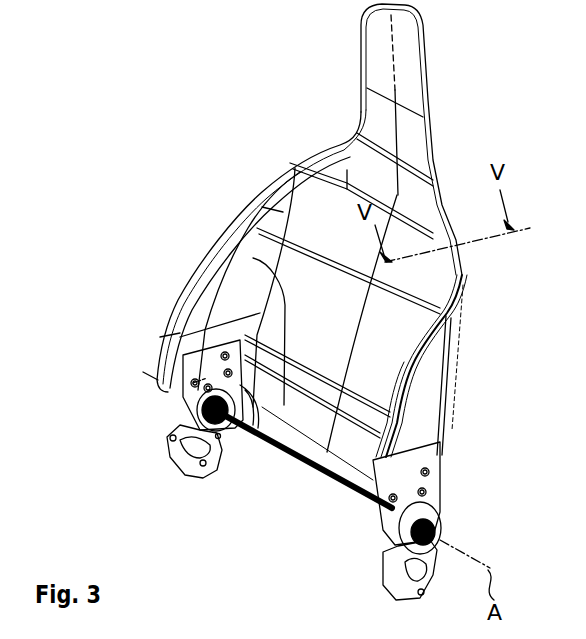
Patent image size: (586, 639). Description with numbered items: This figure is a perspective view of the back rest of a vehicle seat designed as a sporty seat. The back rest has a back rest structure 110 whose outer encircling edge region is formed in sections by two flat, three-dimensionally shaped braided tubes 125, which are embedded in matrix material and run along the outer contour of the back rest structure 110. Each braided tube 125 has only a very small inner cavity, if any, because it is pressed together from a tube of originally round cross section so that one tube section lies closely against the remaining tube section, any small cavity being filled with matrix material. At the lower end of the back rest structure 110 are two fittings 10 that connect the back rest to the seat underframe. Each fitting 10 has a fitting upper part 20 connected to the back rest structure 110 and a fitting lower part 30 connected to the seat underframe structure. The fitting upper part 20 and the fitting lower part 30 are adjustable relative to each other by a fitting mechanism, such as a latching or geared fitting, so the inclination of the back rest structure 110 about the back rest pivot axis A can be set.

The back rest structure 110 is at (410, 70).
The braided tube 125 is at (428, 125).
The fitting upper part 20 is at (180, 393).
The fitting 10 is at (223, 423).
The fitting lower part 30 is at (183, 458).